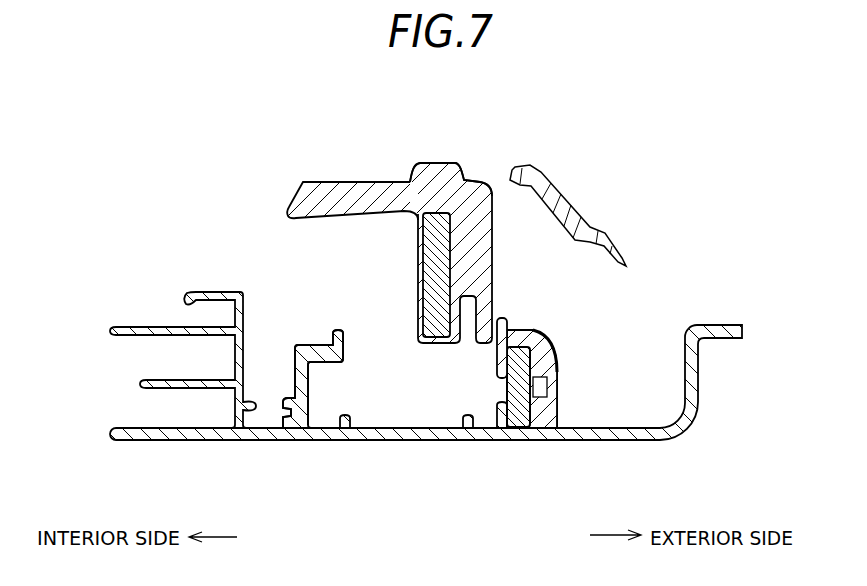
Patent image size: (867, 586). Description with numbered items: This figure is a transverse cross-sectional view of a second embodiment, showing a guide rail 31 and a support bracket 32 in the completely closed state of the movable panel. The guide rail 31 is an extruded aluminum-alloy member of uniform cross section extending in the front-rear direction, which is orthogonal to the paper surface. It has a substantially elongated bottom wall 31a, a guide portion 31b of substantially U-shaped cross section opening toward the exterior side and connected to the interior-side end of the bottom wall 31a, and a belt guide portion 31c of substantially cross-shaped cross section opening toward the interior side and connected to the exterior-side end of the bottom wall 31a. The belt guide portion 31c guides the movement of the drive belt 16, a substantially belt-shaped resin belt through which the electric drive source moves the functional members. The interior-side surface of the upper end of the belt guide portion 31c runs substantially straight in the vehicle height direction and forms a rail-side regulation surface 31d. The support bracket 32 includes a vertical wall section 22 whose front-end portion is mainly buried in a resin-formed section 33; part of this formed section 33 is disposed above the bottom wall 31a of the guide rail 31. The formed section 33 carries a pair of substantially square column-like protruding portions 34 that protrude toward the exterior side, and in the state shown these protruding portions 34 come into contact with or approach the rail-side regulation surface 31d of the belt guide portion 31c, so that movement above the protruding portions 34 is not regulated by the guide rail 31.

The drive belt 16 is at (513, 432).
The vertical wall section 22 is at (417, 273).
The guide rail 31 is at (577, 447).
The bottom wall 31a is at (388, 440).
The guide portion 31b is at (296, 382).
The belt guide portion 31c is at (553, 353).
The rail-side regulation surface 31d is at (493, 347).
The support bracket 32 is at (456, 158).
The formed section 33 is at (353, 182).
The protruding portion 34 is at (497, 252).